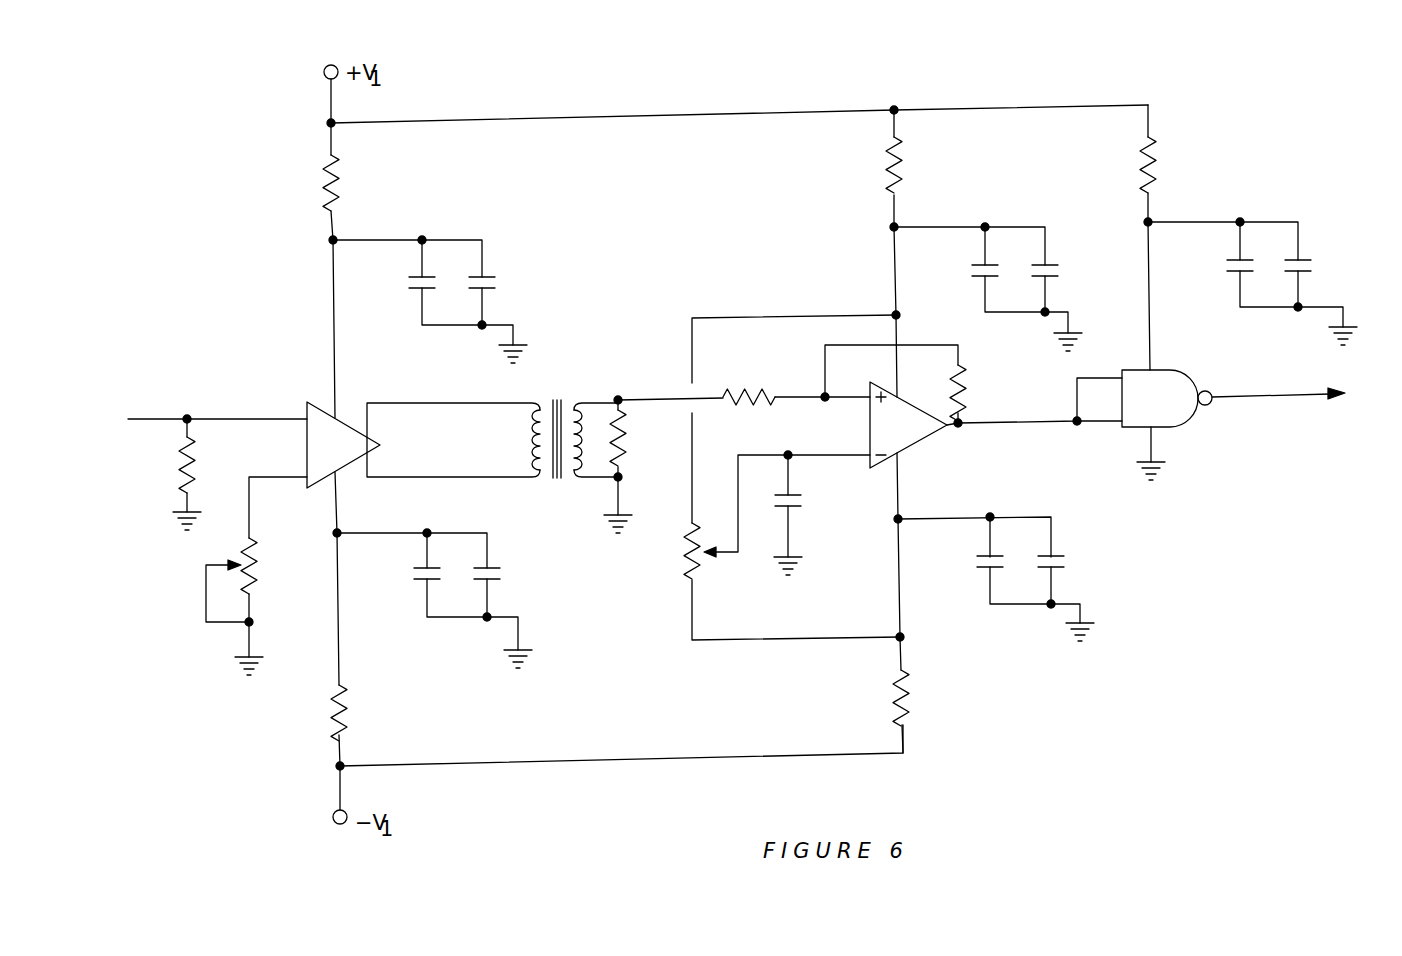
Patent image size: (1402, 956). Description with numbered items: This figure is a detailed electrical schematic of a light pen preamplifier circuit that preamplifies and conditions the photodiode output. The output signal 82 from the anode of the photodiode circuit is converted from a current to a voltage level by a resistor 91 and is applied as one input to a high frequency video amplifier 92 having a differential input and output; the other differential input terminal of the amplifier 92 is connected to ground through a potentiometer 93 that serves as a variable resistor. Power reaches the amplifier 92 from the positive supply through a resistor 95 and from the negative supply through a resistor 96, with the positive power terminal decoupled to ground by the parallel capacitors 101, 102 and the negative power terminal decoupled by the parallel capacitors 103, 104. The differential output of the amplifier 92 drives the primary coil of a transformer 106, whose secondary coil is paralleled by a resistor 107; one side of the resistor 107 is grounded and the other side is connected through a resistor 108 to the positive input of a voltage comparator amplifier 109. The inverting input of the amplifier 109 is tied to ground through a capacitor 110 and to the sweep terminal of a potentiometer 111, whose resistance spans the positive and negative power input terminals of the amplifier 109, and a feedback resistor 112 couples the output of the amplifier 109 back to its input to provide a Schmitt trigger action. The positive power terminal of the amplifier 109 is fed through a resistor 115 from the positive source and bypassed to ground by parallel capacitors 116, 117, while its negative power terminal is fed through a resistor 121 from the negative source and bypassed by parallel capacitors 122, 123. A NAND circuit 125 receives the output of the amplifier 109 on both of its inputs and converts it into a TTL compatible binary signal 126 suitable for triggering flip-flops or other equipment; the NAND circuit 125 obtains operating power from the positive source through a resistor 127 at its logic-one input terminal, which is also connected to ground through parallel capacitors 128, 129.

The output signal 82 is at (166, 418).
The resistor 91 is at (178, 464).
The high frequency video amplifier 92 is at (306, 400).
The potentiometer 93 is at (262, 565).
The resistor 95 is at (324, 184).
The resistor 96 is at (350, 711).
The capacitor 101 is at (410, 280).
The capacitor 102 is at (495, 281).
The capacitor 103 is at (413, 574).
The capacitor 104 is at (503, 576).
The transformer 106 is at (558, 392).
The resistor 107 is at (624, 439).
The resistor 108 is at (768, 390).
The voltage comparator amplifier 109 is at (920, 440).
The capacitor 110 is at (805, 500).
The potentiometer 111 is at (685, 572).
The feedback resistor 112 is at (965, 390).
The resistor 115 is at (905, 172).
The capacitor 116 is at (975, 269).
The capacitor 117 is at (1055, 271).
The resistor 121 is at (912, 702).
The capacitor 122 is at (978, 561).
The capacitor 123 is at (1065, 562).
The NAND circuit 125 is at (1180, 428).
The binary signal 126 is at (1288, 392).
The resistor 127 is at (1155, 173).
The capacitor 128 is at (1230, 263).
The capacitor 129 is at (1312, 266).